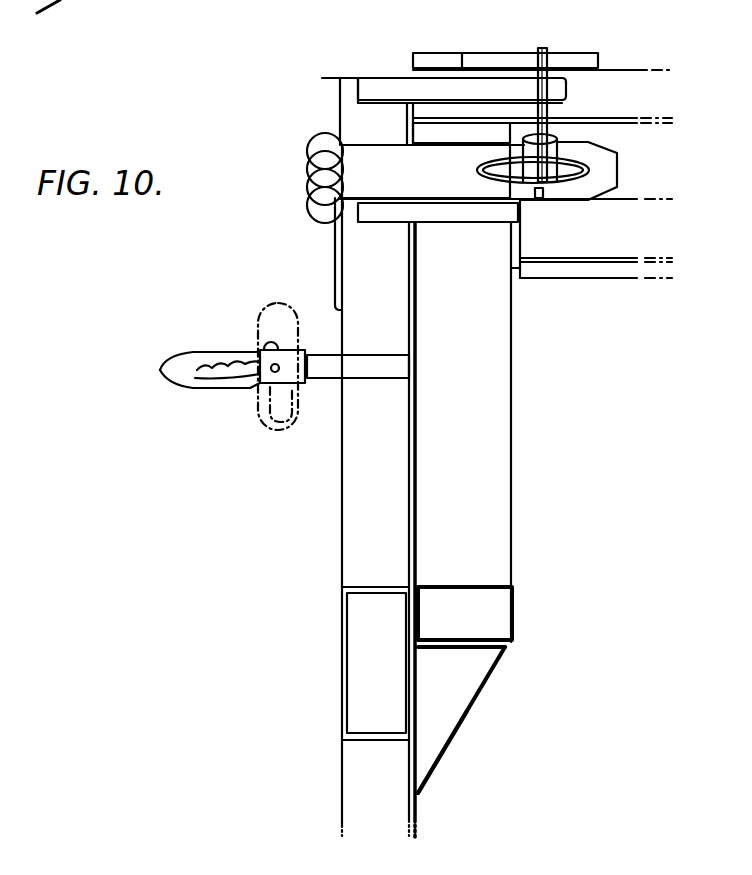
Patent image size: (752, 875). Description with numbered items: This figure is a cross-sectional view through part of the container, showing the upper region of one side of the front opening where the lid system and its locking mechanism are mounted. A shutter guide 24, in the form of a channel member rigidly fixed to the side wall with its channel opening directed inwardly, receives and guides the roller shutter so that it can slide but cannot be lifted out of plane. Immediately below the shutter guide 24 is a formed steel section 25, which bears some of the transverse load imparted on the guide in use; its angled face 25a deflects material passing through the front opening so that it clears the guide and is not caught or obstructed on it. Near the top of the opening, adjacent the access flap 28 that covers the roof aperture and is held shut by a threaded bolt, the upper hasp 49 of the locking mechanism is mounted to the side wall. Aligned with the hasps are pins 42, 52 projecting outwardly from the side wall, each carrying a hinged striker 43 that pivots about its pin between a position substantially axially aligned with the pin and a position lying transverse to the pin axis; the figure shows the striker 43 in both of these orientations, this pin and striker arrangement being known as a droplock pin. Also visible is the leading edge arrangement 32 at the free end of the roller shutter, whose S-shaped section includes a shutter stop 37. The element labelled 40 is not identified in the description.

The shutter guide 24 is at (483, 612).
The formed steel section 25 is at (457, 675).
The angled face 25a is at (467, 725).
The access flap 28 is at (619, 78).
The leading edge arrangement 32 is at (573, 243).
The shutter stop 37 is at (373, 212).
The pin 40 is at (541, 88).
The pin 42 is at (619, 156).
The hinged striker 43 is at (263, 323).
The hasp 49 is at (378, 162).
The pin 52 is at (328, 368).